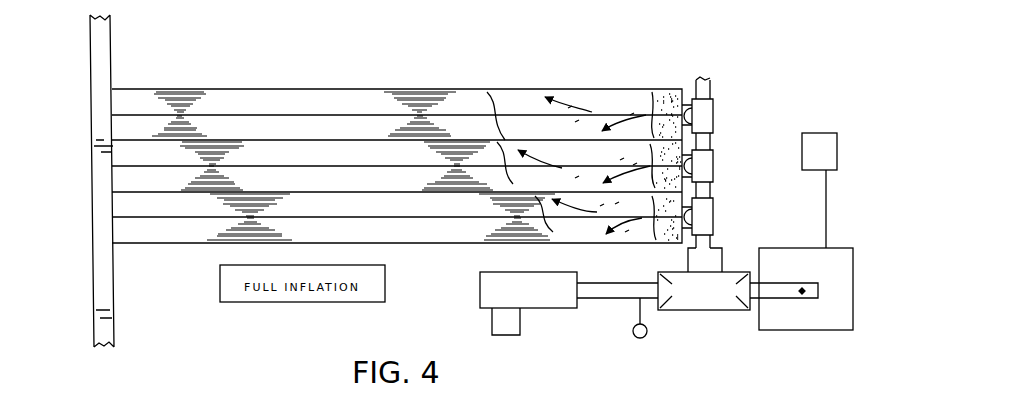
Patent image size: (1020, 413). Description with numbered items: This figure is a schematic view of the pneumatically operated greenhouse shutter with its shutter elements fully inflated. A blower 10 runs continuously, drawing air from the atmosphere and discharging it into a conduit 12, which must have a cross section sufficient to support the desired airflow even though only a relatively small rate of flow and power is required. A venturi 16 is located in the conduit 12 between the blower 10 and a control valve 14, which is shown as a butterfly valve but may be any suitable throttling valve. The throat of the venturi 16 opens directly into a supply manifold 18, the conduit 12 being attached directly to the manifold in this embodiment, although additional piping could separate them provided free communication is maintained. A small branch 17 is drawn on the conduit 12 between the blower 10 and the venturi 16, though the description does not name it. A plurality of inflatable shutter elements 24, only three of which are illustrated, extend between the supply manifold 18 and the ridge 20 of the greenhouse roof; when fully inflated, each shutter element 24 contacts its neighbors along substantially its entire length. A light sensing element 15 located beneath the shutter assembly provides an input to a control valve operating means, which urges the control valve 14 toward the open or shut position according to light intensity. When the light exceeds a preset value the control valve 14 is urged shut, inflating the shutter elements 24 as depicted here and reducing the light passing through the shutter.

The blower 10 is at (555, 308).
The conduit 12 is at (610, 290).
The control valve 14 is at (800, 255).
The light sensing element 15 is at (802, 158).
The venturi 16 is at (703, 306).
The vent valve 17 is at (636, 337).
The supply manifold 18 is at (706, 114).
The ridge 20 is at (96, 165).
The inflatable tube 24 is at (460, 108).